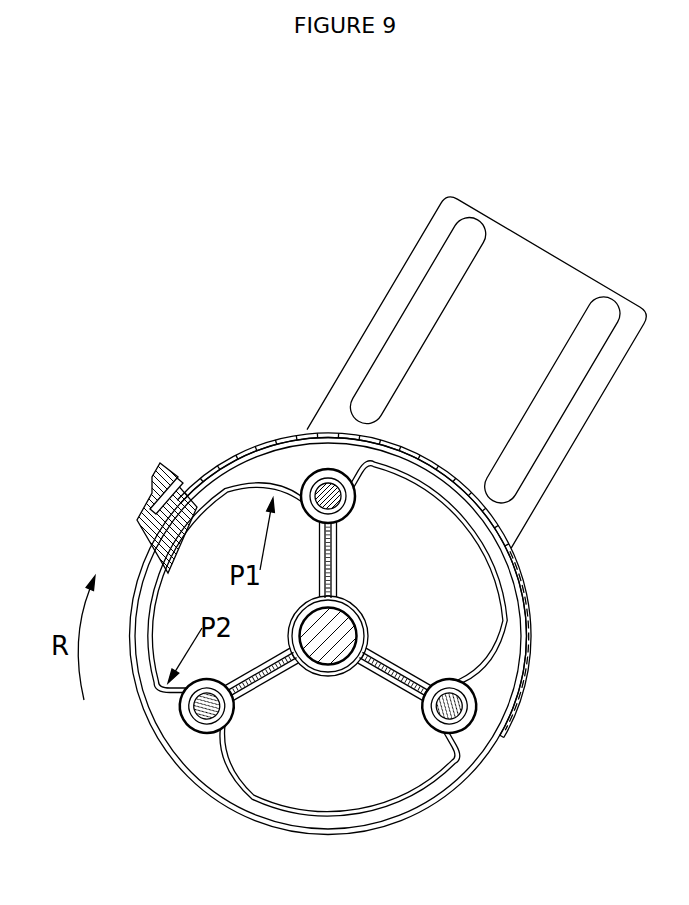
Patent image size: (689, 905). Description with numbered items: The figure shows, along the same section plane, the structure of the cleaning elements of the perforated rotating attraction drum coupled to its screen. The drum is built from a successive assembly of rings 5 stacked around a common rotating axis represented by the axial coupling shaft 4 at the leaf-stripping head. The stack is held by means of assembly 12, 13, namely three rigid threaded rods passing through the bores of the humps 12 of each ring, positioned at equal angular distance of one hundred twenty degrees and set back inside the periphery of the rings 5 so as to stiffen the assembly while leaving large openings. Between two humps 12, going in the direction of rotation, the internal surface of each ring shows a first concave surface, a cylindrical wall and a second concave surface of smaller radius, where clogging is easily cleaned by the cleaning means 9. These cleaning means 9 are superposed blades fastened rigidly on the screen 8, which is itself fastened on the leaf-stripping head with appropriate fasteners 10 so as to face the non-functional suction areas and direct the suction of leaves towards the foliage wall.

The axial coupling shaft 4 is at (328, 637).
The ring 5 is at (205, 767).
The screen 8 is at (232, 436).
The cleaning means 9 is at (147, 522).
The fasteners 10 is at (543, 280).
The hump 12 is at (203, 735).
The means of assembly 13 is at (447, 710).